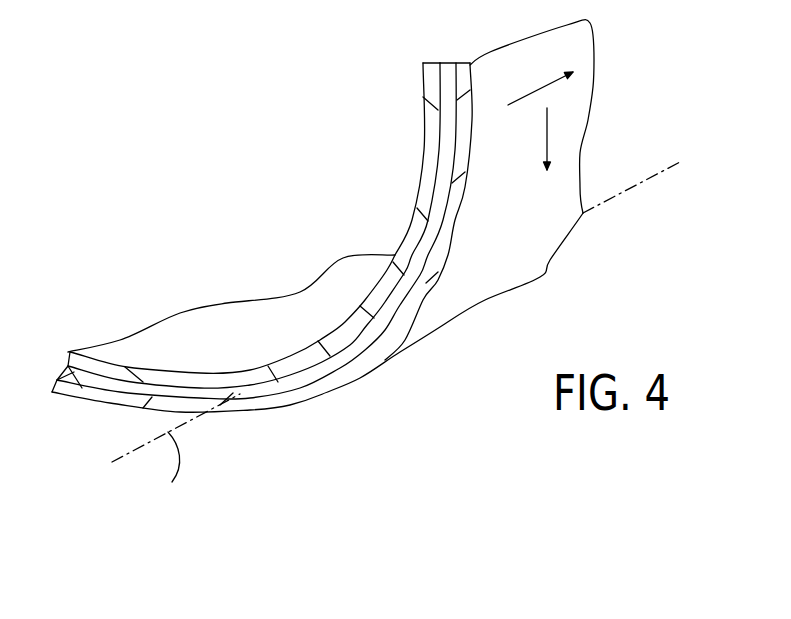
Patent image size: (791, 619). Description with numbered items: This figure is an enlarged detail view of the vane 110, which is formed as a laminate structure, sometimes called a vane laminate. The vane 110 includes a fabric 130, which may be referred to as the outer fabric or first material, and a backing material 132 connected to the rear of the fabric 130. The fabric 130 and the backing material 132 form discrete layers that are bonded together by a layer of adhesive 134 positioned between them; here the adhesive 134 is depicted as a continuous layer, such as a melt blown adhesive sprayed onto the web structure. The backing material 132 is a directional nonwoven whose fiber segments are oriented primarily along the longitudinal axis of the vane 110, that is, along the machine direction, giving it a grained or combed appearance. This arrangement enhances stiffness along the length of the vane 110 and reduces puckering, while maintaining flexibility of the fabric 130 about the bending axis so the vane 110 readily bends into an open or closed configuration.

The vane 110 is at (242, 143).
The fabric 130 is at (480, 294).
The backing material 132 is at (423, 190).
The layer of adhesive 134 is at (290, 387).